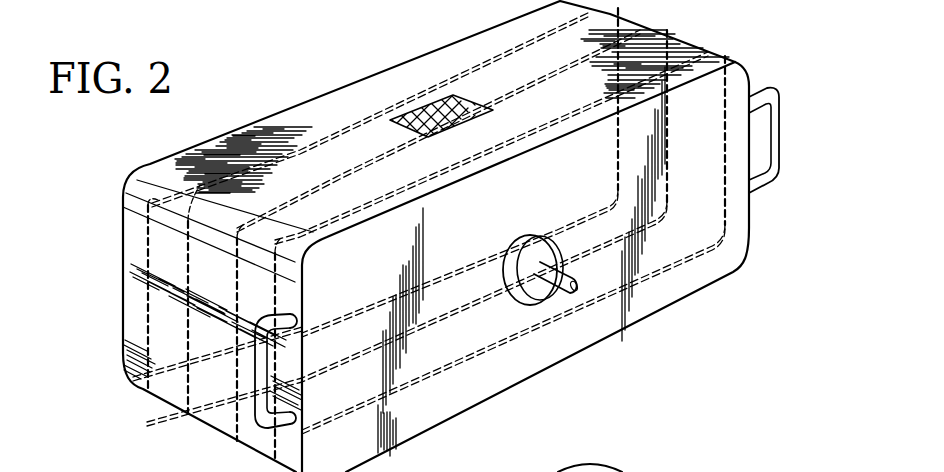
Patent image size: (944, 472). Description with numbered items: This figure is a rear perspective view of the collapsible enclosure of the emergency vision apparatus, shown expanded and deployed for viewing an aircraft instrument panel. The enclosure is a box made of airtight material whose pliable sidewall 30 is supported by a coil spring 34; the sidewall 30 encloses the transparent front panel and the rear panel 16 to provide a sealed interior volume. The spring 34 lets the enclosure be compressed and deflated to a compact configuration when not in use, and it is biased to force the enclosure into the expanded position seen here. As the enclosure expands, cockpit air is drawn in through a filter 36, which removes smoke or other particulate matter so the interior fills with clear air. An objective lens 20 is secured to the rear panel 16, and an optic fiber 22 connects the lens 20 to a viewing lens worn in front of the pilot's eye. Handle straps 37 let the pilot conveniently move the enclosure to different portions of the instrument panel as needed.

The rear panel 16 is at (687, 277).
The objective lens 20 is at (526, 290).
The optic fiber 22 is at (570, 292).
The pliable sidewall 30 is at (163, 337).
The coil spring 34 is at (183, 357).
The filter 36 is at (420, 110).
The handle straps 37 is at (762, 183).